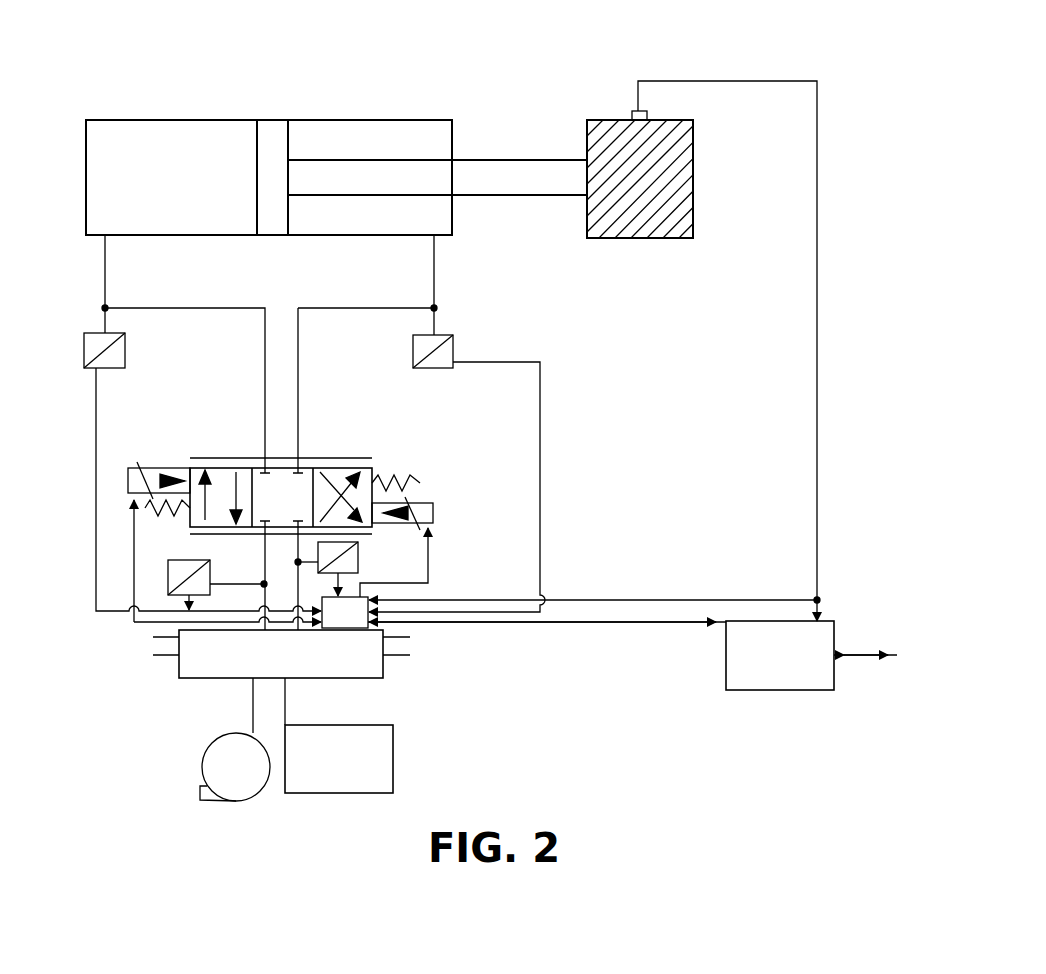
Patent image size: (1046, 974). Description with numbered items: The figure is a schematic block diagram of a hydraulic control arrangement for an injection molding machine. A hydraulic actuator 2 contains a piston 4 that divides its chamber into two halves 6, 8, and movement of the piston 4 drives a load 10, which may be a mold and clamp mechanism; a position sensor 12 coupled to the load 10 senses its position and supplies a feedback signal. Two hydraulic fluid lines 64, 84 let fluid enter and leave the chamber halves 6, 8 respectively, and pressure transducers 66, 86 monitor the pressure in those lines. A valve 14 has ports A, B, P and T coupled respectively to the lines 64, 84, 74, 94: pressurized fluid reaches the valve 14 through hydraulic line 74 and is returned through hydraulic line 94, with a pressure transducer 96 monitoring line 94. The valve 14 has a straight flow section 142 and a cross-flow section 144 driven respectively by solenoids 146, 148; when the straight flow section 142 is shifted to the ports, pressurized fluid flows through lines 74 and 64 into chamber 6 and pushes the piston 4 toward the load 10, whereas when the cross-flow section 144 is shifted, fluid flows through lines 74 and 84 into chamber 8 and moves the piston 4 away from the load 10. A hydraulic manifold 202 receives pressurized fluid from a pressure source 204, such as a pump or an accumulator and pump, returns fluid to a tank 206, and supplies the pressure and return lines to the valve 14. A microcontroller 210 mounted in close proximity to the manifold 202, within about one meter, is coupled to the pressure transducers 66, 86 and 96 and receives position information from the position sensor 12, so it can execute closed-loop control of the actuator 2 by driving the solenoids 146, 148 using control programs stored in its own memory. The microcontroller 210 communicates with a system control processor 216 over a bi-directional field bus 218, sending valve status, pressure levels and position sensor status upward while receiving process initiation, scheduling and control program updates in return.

The hydraulic actuator 2 is at (393, 120).
The piston 4 is at (272, 228).
The chamber half 6 is at (88, 124).
The chamber half 8 is at (443, 219).
The load 10 is at (680, 212).
The position sensor 12 is at (647, 112).
The valve 14 is at (314, 442).
The hydraulic fluid line 64 is at (193, 308).
The pressure transducer 66 is at (84, 350).
The hydraulic line 74 is at (263, 550).
The hydraulic fluid line 84 is at (338, 308).
The pressure transducer 86 is at (455, 347).
The hydraulic line 94 is at (300, 610).
The pressure transducer 96 is at (358, 552).
The straight flow section 142 is at (222, 460).
The cross-flow section 144 is at (338, 462).
The solenoid 146 is at (128, 478).
The solenoid 148 is at (433, 512).
The hydraulic manifold 202 is at (370, 680).
The pressure source 204 is at (208, 763).
The tank 206 is at (393, 772).
The microcontroller 210 is at (358, 625).
The system control processor 216 is at (753, 690).
The field bus 218 is at (632, 626).